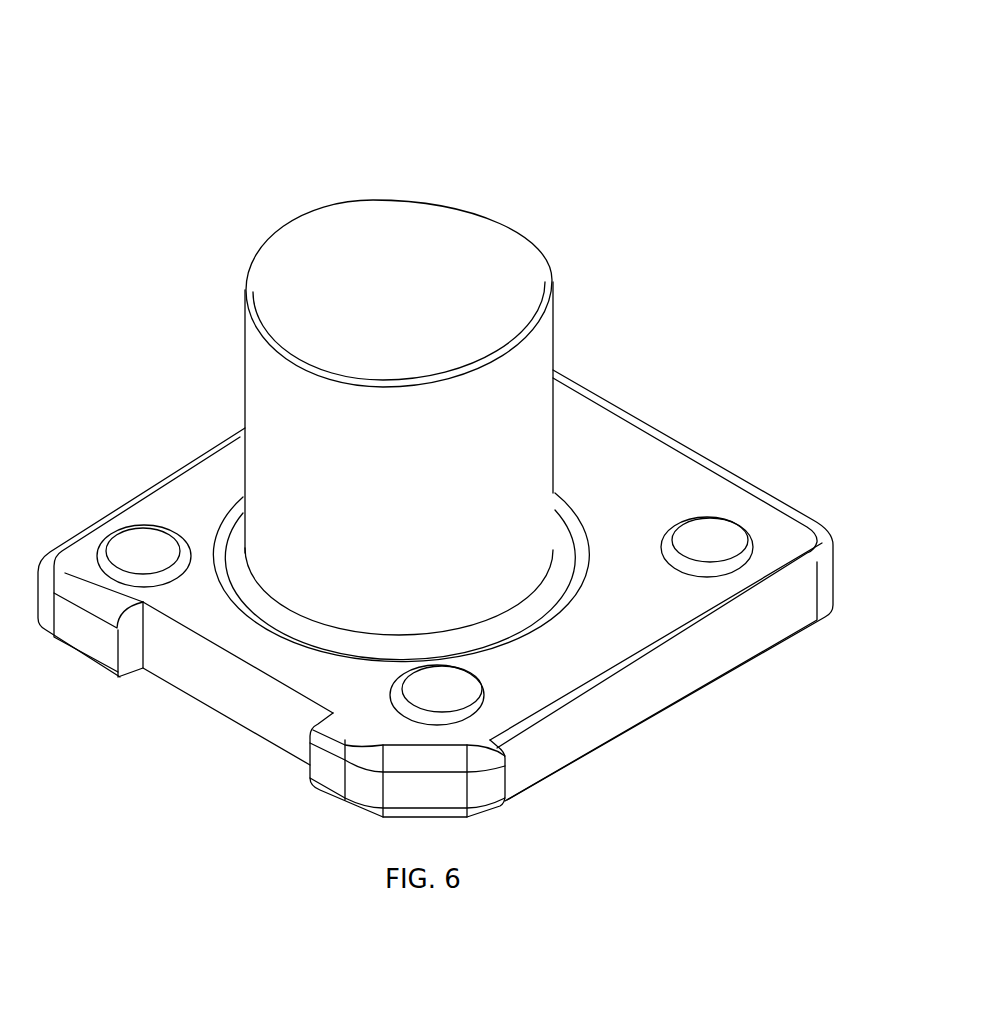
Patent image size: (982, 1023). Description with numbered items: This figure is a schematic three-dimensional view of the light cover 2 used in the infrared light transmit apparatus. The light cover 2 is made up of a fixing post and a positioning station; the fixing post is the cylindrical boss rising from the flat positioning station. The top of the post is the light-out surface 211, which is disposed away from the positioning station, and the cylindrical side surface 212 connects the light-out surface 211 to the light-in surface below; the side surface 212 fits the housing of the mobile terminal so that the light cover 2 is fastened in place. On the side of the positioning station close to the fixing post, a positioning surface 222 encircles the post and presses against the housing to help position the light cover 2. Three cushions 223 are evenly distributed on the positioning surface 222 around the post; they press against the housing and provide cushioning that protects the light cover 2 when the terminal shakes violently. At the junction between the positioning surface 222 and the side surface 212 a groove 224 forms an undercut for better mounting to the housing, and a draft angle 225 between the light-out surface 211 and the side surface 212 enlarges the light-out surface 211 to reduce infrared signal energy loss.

The light cover 2 is at (468, 104).
The light-out surface 211 is at (460, 273).
The side surface 212 is at (282, 420).
The positioning surface 222 is at (603, 457).
The cushions 223 is at (708, 543).
The groove 224 is at (573, 585).
The draft angle 225 is at (523, 338).